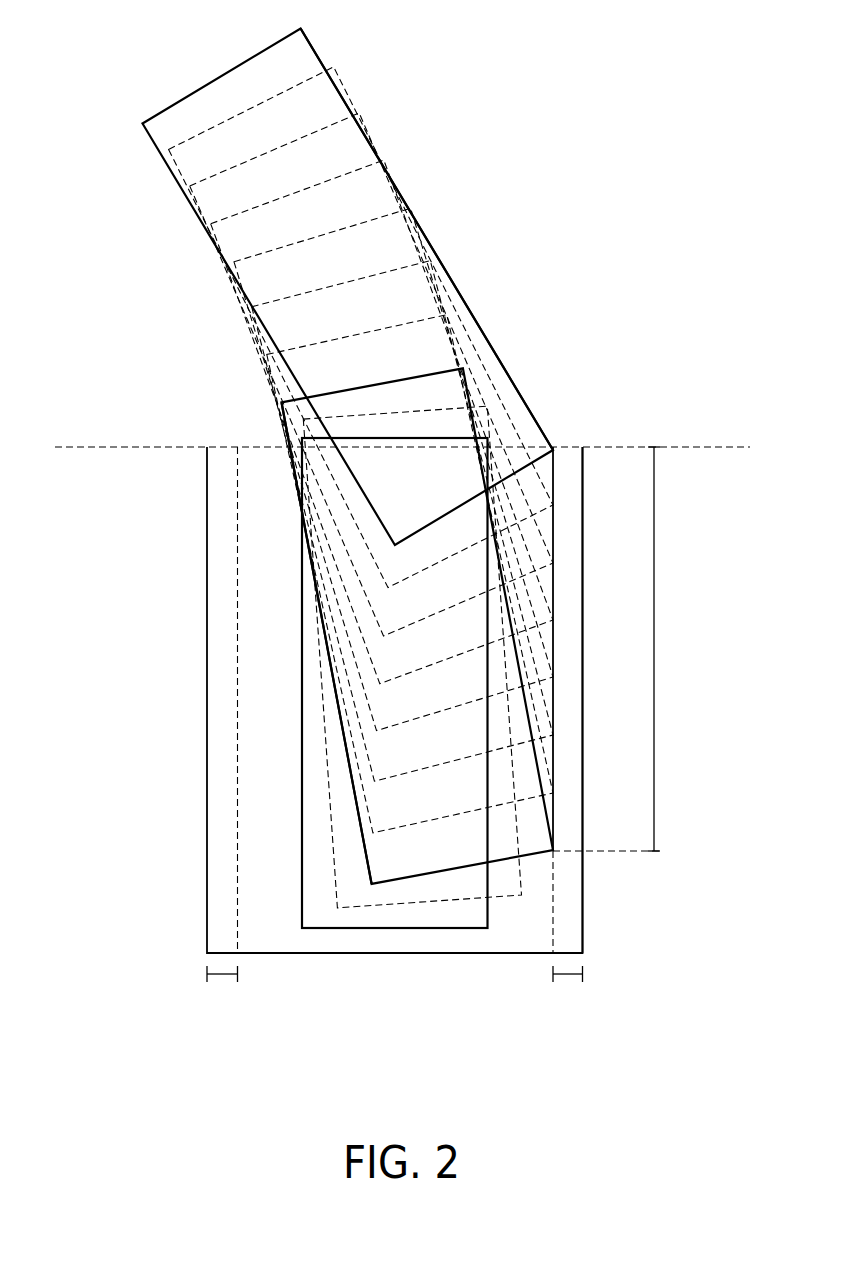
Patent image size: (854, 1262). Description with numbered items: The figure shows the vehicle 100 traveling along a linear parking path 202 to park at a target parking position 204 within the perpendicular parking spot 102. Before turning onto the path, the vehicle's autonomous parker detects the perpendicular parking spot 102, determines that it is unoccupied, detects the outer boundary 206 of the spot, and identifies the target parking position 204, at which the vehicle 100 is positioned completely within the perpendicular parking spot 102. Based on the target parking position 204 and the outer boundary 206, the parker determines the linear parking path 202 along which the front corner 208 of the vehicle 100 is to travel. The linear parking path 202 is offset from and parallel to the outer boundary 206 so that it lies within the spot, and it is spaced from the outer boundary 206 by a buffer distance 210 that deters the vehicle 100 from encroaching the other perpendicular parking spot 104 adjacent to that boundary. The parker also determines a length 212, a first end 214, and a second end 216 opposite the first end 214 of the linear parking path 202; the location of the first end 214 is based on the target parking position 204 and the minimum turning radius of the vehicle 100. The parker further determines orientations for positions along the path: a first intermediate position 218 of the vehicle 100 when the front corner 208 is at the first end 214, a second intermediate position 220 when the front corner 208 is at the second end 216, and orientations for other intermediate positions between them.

The vehicle 100 is at (381, 99).
The perpendicular parking spot 102 is at (357, 970).
The other perpendicular parking spot 104 is at (117, 970).
The linear parking path 202 is at (554, 470).
The target parking position 204 is at (394, 929).
The outer boundary 206 is at (585, 525).
The front corner 208 is at (207, 525).
The buffer distance 210 is at (222, 980).
The length 212 is at (655, 650).
The first end 214 is at (553, 853).
The second end 216 is at (553, 449).
The first intermediate position 218 is at (457, 289).
The second intermediate position 220 is at (332, 683).